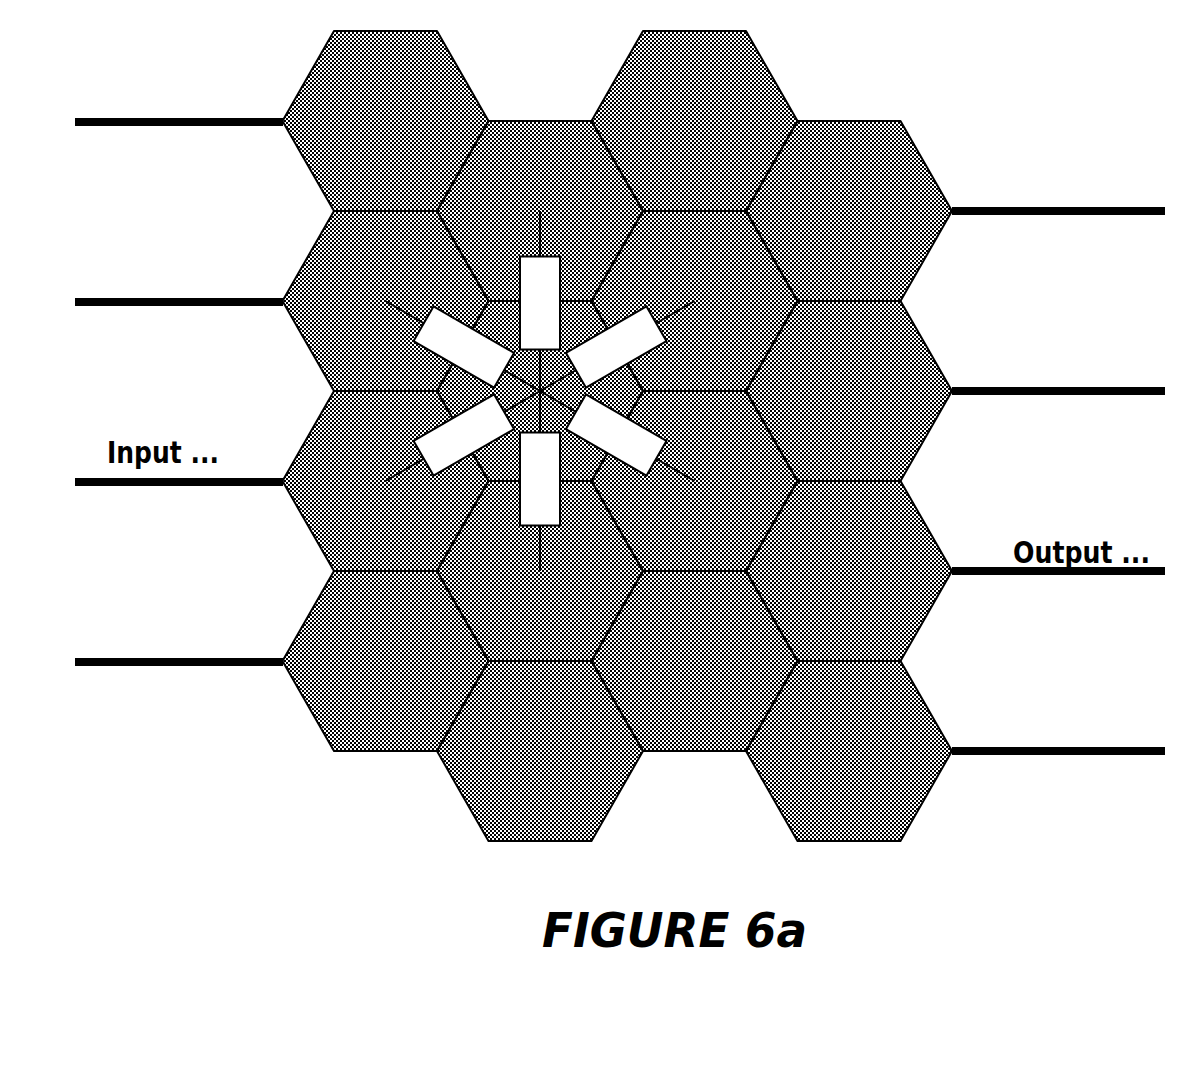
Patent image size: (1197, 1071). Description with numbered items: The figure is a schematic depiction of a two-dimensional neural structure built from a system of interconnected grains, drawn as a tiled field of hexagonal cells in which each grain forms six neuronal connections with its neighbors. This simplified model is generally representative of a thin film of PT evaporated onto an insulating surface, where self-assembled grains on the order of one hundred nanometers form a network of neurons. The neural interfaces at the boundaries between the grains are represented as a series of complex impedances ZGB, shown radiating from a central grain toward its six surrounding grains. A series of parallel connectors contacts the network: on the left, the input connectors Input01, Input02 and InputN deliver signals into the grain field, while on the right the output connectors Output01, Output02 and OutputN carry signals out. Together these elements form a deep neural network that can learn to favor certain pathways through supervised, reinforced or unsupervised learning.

The complex impedance ZGB is at (540, 391).
The input connector Input01 is at (179, 98).
The input connector Input02 is at (179, 277).
The input connector InputN is at (179, 636).
The output connector Output01 is at (1058, 191).
The output connector Output02 is at (1058, 370).
The output connector OutputN is at (1058, 727).